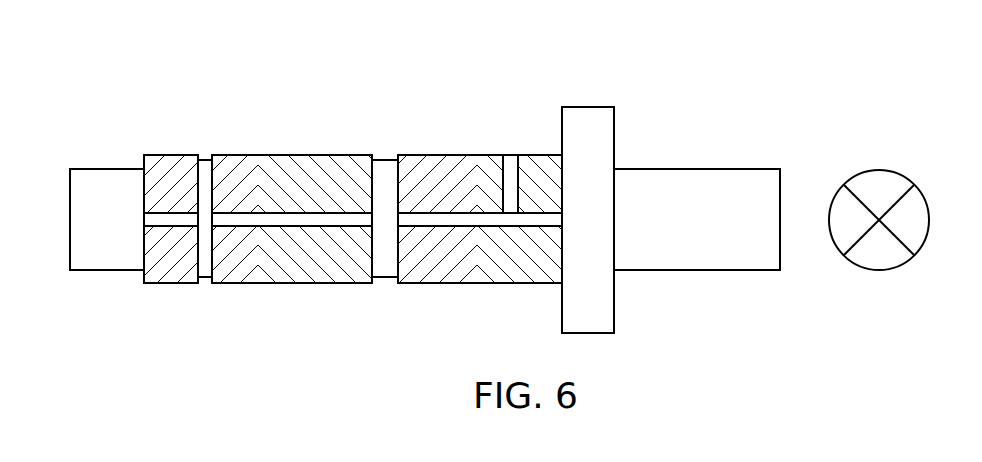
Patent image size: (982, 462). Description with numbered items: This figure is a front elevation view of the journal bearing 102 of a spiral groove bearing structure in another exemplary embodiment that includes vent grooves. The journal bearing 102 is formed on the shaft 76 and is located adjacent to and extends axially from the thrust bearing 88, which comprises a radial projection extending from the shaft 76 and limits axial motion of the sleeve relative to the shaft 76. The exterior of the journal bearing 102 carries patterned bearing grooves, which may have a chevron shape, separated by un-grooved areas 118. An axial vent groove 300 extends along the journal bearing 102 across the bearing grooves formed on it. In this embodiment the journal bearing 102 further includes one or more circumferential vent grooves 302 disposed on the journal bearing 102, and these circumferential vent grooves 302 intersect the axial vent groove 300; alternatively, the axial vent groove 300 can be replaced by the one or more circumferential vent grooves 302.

The shaft 76 is at (624, 80).
The thrust bearing 88 is at (588, 106).
The journal bearing 102 is at (293, 152).
The un-grooved areas 118 is at (382, 158).
The vent groove 300 is at (142, 218).
The circumferential vent grooves 302 is at (203, 158).